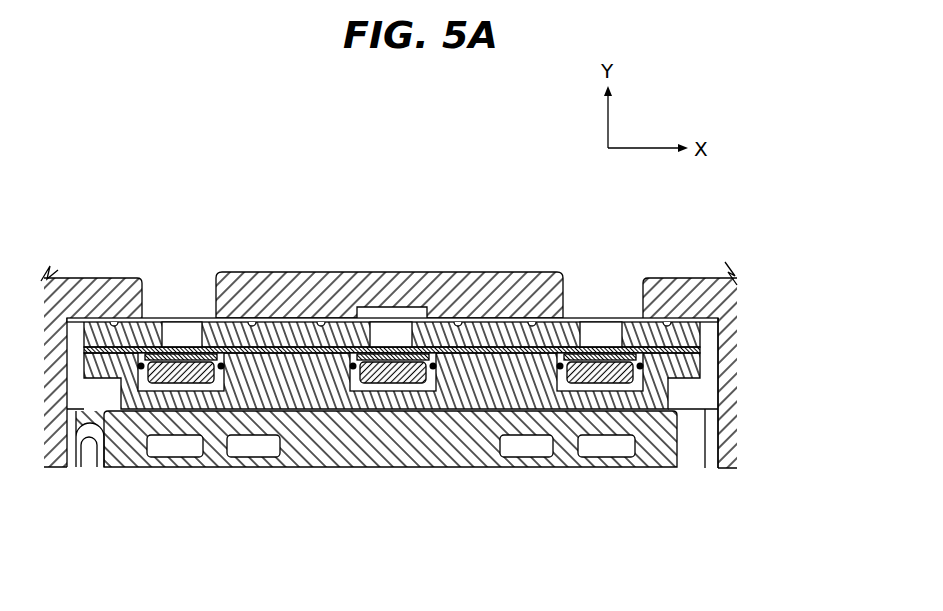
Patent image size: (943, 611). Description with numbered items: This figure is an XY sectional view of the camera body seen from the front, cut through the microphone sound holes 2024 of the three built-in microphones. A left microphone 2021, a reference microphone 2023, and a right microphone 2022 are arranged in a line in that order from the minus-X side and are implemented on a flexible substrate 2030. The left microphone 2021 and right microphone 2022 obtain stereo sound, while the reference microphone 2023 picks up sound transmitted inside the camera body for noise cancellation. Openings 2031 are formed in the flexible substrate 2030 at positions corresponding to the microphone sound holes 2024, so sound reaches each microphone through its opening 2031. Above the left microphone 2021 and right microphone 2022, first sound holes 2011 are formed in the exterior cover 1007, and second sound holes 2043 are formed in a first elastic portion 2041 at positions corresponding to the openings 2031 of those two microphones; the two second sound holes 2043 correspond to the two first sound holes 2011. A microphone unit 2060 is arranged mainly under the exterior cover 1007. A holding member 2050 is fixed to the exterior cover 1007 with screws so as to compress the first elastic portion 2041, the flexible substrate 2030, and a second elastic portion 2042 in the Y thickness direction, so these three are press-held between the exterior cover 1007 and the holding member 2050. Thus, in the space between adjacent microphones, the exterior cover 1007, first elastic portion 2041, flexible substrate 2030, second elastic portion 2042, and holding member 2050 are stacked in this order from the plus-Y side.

The exterior cover 1007 is at (366, 272).
The first sound holes 2011 is at (195, 287).
The left microphone 2021 is at (185, 356).
The right microphone 2022 is at (566, 364).
The reference microphone 2023 is at (368, 378).
The microphone sound holes 2024 is at (182, 360).
The flexible substrate 2030 is at (473, 350).
The openings 2031 is at (193, 360).
The first elastic portion 2041 is at (303, 330).
The second elastic portion 2042 is at (460, 380).
The second sound holes 2043 is at (173, 330).
The holding member 2050 is at (650, 433).
The microphone unit 2060 is at (688, 388).